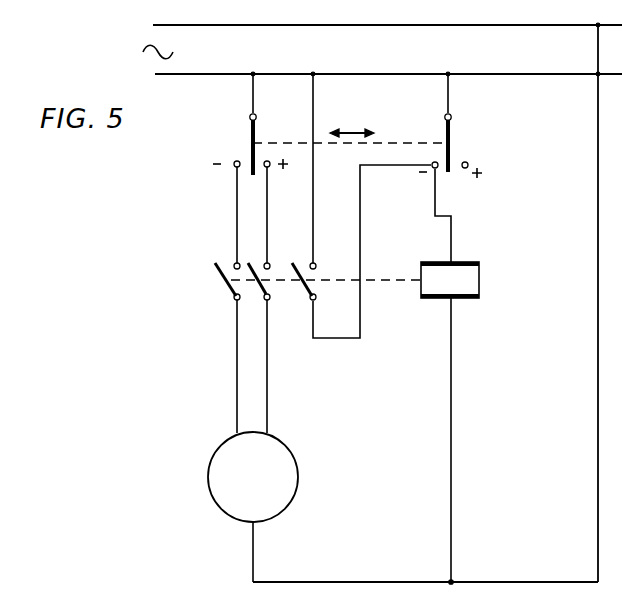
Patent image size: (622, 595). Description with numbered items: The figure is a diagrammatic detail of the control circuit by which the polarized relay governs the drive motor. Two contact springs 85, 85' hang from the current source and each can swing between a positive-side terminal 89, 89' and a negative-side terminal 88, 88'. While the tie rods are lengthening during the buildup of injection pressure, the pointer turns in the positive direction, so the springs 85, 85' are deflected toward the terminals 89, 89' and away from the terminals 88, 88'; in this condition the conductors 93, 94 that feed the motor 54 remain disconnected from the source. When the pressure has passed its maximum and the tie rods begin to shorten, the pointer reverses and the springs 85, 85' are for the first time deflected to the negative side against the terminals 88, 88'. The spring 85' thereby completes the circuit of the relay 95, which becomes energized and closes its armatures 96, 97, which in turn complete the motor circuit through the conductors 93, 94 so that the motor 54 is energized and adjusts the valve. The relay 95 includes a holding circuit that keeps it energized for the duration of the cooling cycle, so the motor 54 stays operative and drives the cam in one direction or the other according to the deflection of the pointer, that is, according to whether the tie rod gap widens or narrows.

The contact spring 85 is at (230, 123).
The contact spring 85' is at (468, 122).
The terminal 88 is at (218, 178).
The terminal 88' is at (449, 183).
The terminal 89 is at (282, 182).
The terminal 89' is at (488, 160).
The conductor 93 is at (237, 406).
The conductor 94 is at (268, 391).
The relay 95 is at (474, 285).
The armature 96 is at (234, 292).
The armature 97 is at (311, 302).
The motor 54 is at (223, 508).